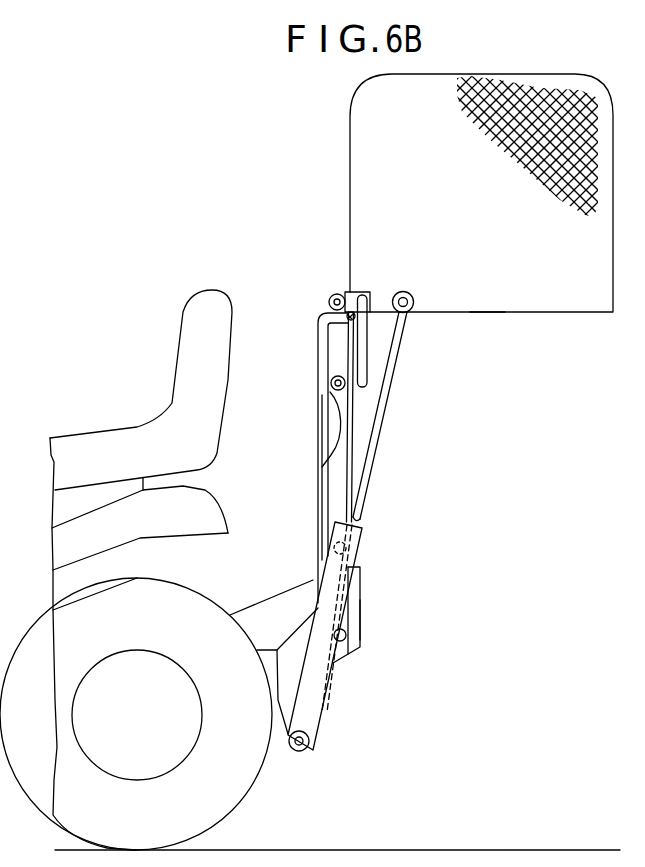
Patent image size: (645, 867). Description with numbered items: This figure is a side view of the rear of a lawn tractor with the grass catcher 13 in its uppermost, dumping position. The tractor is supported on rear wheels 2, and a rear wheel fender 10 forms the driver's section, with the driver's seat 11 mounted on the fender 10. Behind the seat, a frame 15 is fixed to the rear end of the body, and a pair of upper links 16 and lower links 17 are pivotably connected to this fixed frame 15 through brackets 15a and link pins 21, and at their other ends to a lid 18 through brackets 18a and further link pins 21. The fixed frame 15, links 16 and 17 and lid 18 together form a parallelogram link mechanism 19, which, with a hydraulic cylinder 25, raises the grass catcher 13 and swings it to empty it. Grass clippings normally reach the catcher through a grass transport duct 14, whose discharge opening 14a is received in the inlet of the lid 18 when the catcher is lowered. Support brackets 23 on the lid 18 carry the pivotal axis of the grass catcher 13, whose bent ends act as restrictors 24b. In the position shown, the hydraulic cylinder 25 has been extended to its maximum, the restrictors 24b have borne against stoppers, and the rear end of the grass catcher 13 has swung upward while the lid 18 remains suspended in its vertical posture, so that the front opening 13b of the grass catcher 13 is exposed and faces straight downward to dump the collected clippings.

The rear wheels 2 is at (240, 784).
The rear wheel fender 10 is at (218, 496).
The driver's seat 11 is at (187, 354).
The grass catcher 13 is at (350, 197).
The opening 13b is at (470, 315).
The grass transport duct 14 is at (283, 602).
The grass clipping discharge opening 14a is at (362, 618).
The frame 15 is at (322, 430).
The brackets 15a is at (322, 467).
The upper links 16 is at (337, 352).
The lower links 17 is at (348, 615).
The lid 18 is at (356, 424).
The brackets 18a is at (344, 292).
The parallelogram link mechanism 19 is at (359, 644).
The link pins 21 is at (333, 296).
The support brackets 23 is at (361, 290).
The restrictors 24b is at (366, 360).
The hydraulic cylinder 25 is at (307, 713).